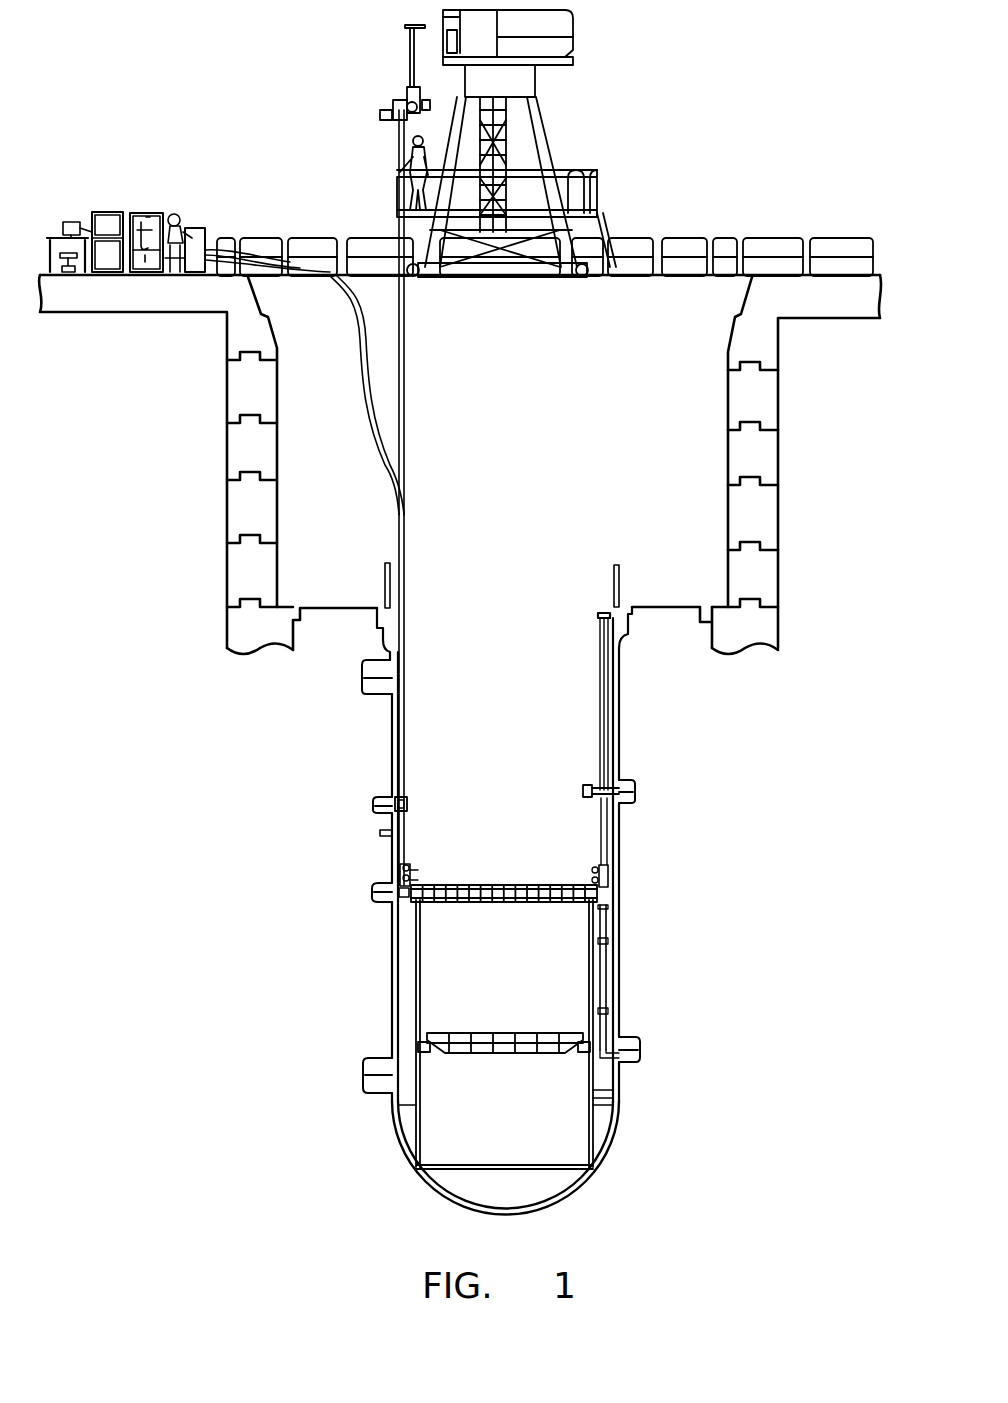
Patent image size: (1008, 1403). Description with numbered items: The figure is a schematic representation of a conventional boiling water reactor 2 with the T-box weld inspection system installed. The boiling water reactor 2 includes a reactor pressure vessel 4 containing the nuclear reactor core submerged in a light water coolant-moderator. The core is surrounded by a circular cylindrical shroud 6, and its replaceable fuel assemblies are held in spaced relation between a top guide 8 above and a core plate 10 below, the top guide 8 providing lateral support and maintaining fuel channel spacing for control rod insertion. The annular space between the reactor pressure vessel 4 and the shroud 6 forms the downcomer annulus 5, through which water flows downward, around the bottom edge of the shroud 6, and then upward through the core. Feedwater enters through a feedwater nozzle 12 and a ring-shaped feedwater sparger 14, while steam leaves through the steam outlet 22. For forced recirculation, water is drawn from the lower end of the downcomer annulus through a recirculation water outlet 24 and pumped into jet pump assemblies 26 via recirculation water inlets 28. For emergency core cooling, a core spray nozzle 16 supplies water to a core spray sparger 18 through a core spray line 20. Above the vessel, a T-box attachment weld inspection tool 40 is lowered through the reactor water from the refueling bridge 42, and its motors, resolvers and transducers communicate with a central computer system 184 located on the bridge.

The boiling water reactor 2 is at (272, 830).
The reactor pressure vessel 4 is at (392, 941).
The downcomer annulus 5 is at (401, 997).
The shroud 6 is at (418, 968).
The top guide 8 is at (490, 883).
The core plate 10 is at (484, 1055).
The feedwater nozzle 12 is at (628, 778).
The feedwater sparger 14 is at (590, 786).
The core spray nozzle 16 is at (383, 795).
The core spray sparger 18 is at (418, 880).
The core spray line 20 is at (398, 877).
The steam outlet 22 is at (372, 683).
The recirculation water outlet 24 is at (378, 1095).
The jet pump assembly 26 is at (604, 965).
The recirculation water inlet 28 is at (640, 1045).
The T-box attachment weld inspection tool 40 is at (410, 802).
The refueling bridge 42 is at (652, 228).
The central computer system 184 is at (128, 180).